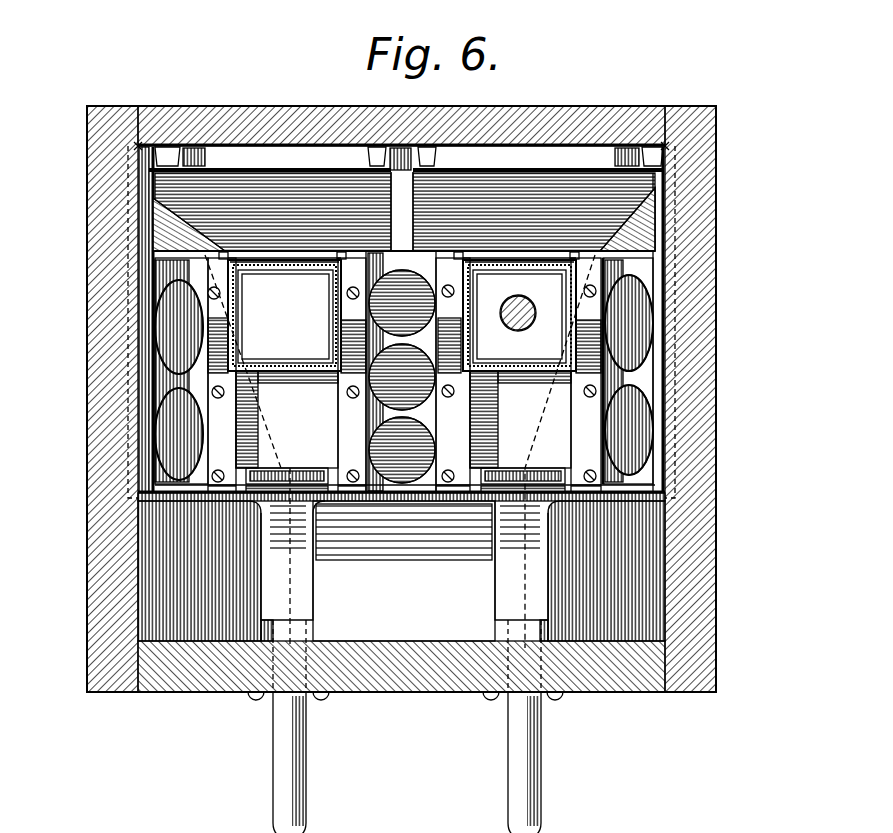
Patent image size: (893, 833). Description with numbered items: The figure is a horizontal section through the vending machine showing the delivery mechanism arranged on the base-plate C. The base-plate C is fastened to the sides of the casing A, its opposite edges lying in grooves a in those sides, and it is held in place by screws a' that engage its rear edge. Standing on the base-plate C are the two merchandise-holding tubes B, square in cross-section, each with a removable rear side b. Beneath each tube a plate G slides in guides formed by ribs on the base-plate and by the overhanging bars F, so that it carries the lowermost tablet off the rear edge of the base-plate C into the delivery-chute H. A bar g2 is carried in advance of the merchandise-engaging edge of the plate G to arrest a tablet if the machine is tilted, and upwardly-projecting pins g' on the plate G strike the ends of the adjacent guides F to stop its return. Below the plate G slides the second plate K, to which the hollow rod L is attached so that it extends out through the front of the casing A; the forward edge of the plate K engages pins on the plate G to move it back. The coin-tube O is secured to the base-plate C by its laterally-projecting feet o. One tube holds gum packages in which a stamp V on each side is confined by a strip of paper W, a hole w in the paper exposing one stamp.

The casing A is at (557, 108).
The groove a is at (396, 323).
The screw a' is at (398, 136).
The base-plate C is at (480, 148).
The delivery-chute H is at (324, 137).
The bar F is at (404, 371).
The strip of paper W is at (402, 315).
The stamp V is at (514, 298).
The hole w is at (518, 324).
The pin g' is at (403, 237).
The bar g2 is at (300, 250).
The rear side of tube b is at (264, 255).
The plate G is at (403, 419).
The merchandise-holding tube B is at (248, 364).
The coin-tube O is at (282, 460).
The foot o is at (214, 462).
The second plate K is at (404, 568).
The rod L is at (265, 755).